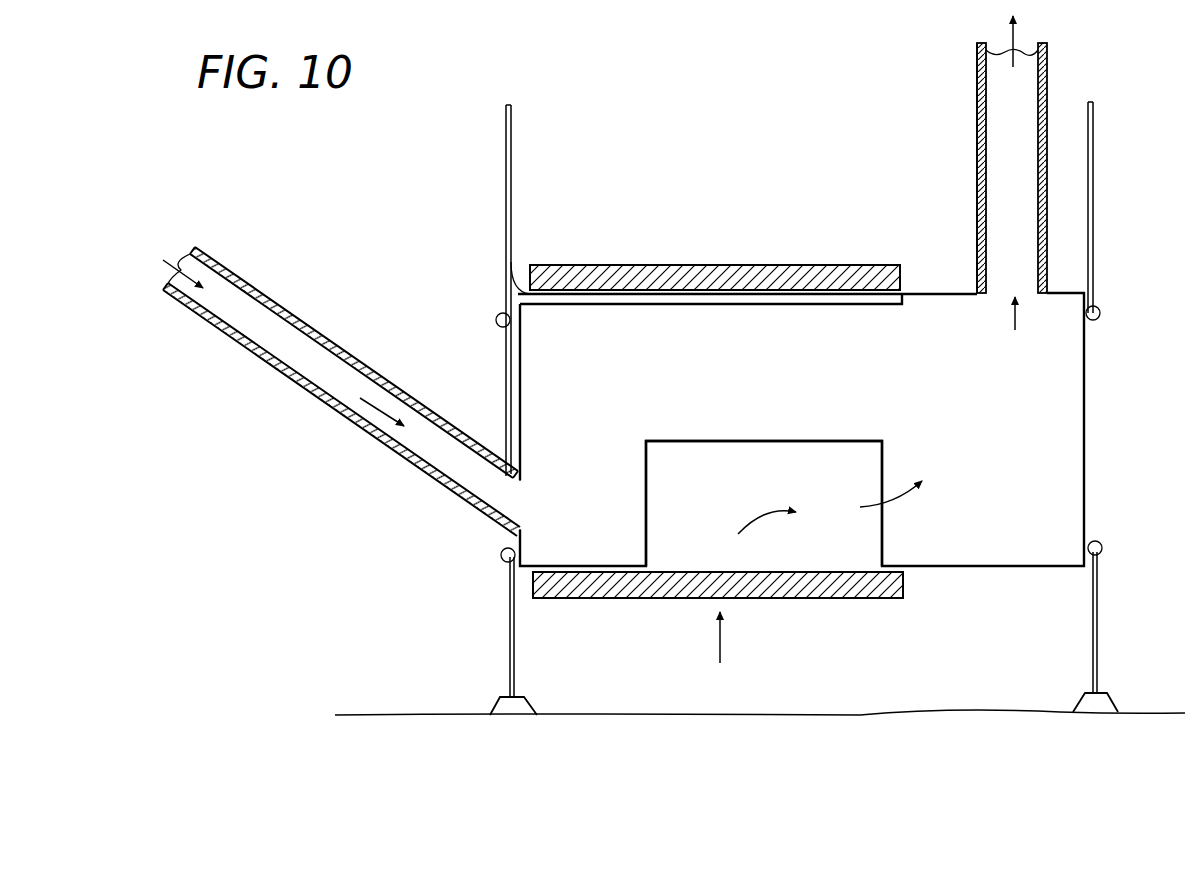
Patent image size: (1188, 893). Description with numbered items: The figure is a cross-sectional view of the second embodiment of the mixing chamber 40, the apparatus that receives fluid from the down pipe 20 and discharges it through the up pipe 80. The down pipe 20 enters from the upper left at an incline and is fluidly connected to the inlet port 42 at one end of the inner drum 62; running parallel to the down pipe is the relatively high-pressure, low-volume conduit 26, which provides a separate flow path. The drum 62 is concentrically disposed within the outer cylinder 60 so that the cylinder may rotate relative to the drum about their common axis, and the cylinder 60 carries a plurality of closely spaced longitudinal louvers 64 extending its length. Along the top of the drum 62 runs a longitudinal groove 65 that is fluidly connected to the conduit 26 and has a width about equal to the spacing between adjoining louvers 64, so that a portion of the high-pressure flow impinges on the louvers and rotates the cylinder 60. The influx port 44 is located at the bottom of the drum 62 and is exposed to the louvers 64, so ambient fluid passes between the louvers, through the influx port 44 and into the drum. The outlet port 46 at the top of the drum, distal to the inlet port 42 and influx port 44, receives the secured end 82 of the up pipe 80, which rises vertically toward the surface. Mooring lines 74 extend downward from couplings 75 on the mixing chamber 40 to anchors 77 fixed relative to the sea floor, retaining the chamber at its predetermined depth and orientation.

The down pipe 20 is at (292, 332).
The high-pressure, low-volume conduit 26 is at (252, 277).
The mixing chamber 40 is at (1094, 500).
The inlet port 42 is at (522, 527).
The influx port 44 is at (656, 565).
The outlet port 46 is at (1040, 292).
The outer cylinder 60 is at (508, 262).
The inner drum 62 is at (1086, 440).
The longitudinal louvers 64 is at (578, 268).
The longitudinal groove 65 is at (688, 300).
The mooring lines 74 is at (514, 665).
The couplings 75 is at (502, 558).
The anchors 77 is at (507, 712).
The up pipe 80 is at (1047, 78).
The secured end 82 is at (977, 293).